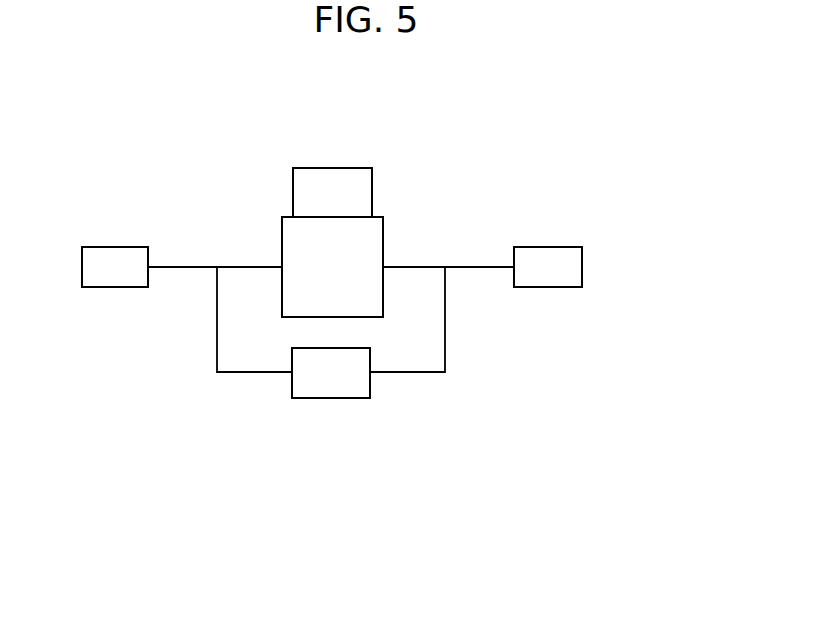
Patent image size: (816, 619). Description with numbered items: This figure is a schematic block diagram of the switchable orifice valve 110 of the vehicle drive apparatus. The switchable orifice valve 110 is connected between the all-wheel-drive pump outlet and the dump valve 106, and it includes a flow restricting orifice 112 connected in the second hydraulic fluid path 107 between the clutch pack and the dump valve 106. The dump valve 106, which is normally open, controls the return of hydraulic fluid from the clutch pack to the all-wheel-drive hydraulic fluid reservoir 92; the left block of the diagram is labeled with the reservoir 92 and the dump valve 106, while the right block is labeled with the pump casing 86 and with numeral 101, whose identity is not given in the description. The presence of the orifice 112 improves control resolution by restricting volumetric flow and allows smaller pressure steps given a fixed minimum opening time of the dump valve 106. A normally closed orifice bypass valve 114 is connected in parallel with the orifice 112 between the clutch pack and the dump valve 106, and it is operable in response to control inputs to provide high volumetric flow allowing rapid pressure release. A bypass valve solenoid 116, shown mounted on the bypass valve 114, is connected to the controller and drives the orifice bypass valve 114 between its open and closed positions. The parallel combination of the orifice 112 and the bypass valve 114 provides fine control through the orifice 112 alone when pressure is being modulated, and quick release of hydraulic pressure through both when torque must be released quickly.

The switchable orifice valve 110 is at (458, 153).
The all-wheel-drive hydraulic fluid reservoir 92 is at (95, 277).
The dump valve 106 is at (115, 267).
The second hydraulic fluid path 107 is at (177, 267).
The bypass valve solenoid 116 is at (318, 180).
The orifice bypass valve 114 is at (372, 273).
The pump casing 86 is at (575, 260).
The output line 101 is at (548, 267).
The flow restricting orifice 112 is at (357, 389).